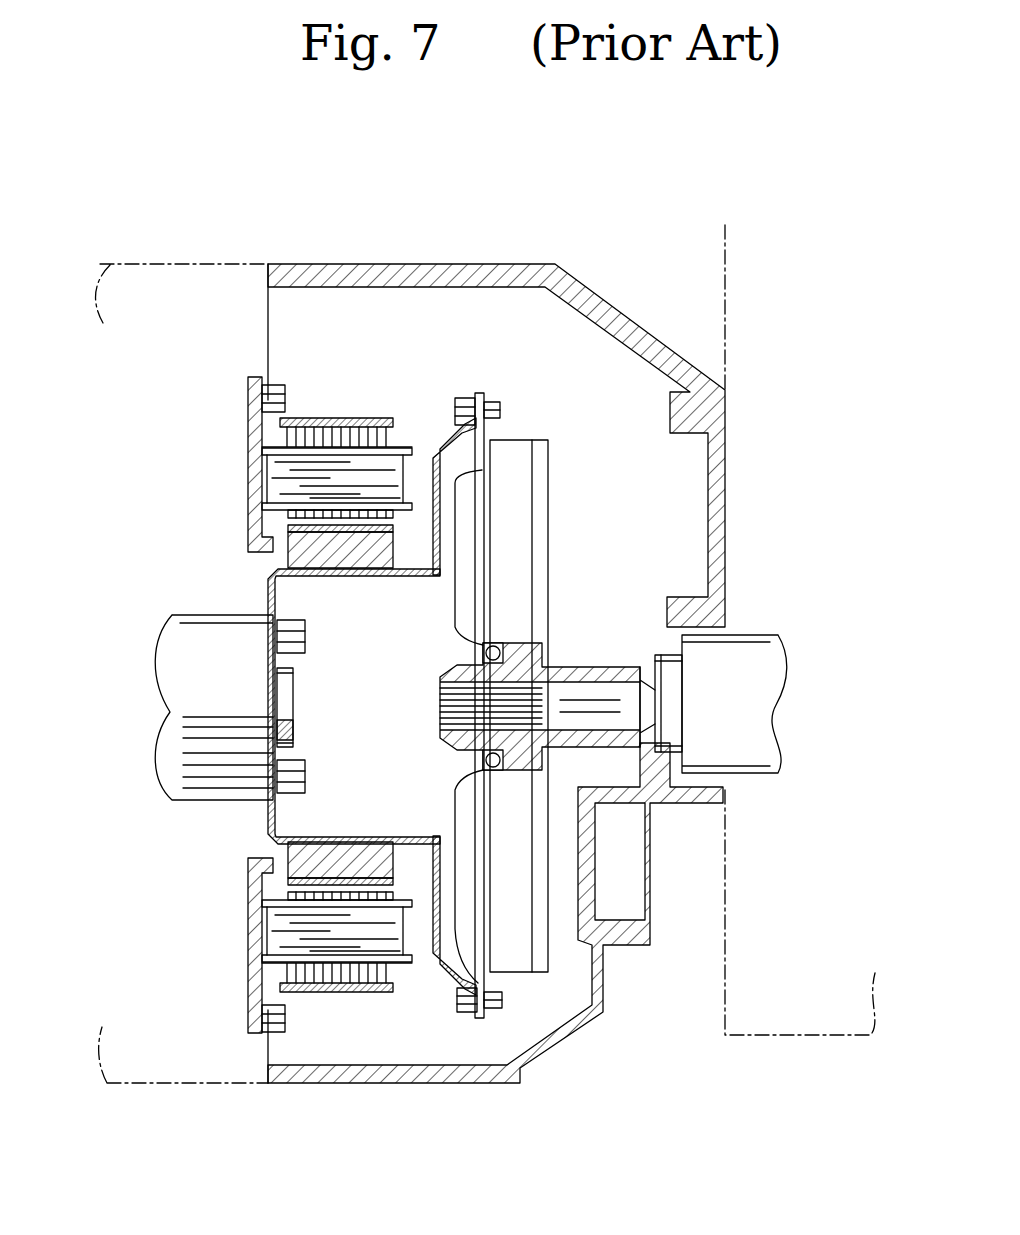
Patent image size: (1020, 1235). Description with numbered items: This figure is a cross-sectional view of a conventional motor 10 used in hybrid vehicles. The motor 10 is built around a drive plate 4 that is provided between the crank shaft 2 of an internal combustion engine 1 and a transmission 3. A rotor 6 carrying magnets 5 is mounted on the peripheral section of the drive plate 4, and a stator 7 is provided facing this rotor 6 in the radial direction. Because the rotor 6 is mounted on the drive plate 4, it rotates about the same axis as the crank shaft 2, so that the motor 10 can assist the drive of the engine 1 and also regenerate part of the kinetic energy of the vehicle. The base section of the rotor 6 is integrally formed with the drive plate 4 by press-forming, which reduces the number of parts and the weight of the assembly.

The internal combustion engine 1 is at (223, 263).
The crank shaft 2 is at (214, 615).
The transmission 3 is at (553, 437).
The drive plate 4 is at (437, 945).
The magnets 5 is at (347, 540).
The rotor 6 is at (237, 838).
The stator 7 is at (357, 417).
The motor 10 is at (185, 943).